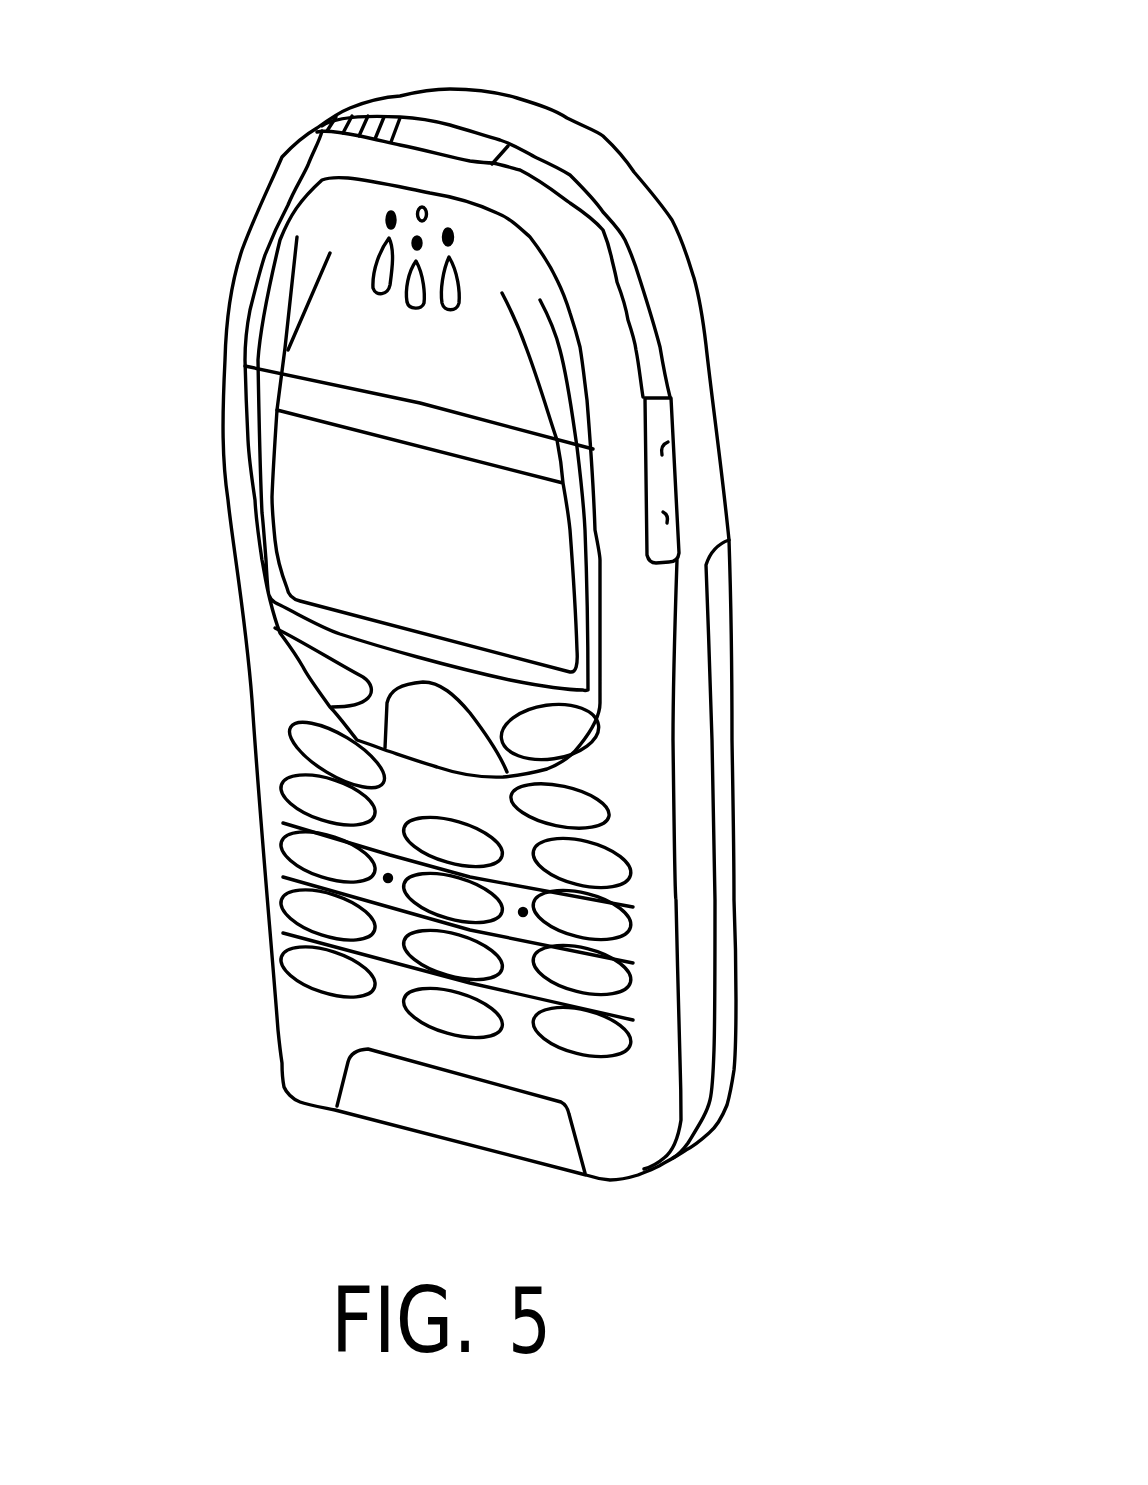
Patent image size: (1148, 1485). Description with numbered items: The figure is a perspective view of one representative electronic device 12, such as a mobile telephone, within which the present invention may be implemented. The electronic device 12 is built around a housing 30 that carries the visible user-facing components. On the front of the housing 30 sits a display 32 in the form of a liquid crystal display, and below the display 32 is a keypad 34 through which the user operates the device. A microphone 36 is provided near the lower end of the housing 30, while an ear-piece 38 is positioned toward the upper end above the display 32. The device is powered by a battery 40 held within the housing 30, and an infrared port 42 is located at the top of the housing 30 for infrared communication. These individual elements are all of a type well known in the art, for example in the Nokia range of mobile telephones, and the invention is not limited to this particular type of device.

The electronic device 12 is at (633, 99).
The housing 30 is at (682, 307).
The display 32 is at (540, 593).
The keypad 34 is at (583, 1040).
The microphone 36 is at (373, 1095).
The ear-piece 38 is at (400, 253).
The battery 40 is at (727, 1012).
The infrared port 42 is at (447, 135).